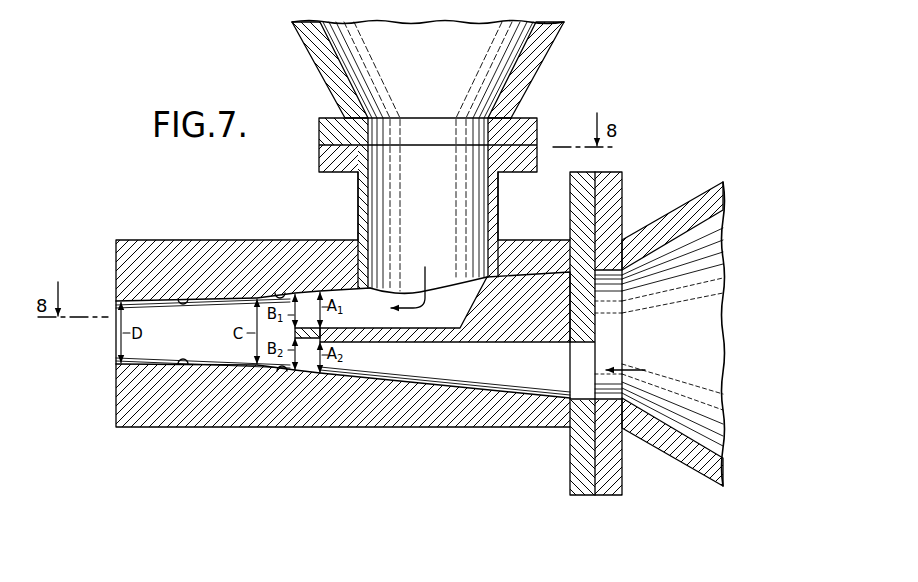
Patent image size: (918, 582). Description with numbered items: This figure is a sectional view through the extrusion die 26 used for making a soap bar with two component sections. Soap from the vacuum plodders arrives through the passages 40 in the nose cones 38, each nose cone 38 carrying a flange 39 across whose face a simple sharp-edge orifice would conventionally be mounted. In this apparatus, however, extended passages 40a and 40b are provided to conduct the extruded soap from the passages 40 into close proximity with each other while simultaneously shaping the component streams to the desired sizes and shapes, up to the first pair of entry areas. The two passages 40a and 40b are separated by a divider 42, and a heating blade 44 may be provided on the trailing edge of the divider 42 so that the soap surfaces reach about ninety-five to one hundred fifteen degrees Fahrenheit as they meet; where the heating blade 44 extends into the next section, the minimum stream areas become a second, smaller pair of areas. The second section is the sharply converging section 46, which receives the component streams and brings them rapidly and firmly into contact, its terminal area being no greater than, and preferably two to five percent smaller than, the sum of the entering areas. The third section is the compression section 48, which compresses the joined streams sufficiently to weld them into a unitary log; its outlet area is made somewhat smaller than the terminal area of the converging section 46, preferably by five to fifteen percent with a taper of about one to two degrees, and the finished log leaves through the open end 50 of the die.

The extrusion die 26 is at (110, 414).
The nose cone 38 is at (546, 61).
The flange 39 is at (539, 122).
The passage 40 is at (422, 75).
The passage 40a is at (370, 368).
The passage 40b is at (433, 315).
The divider 42 is at (350, 341).
The heating blade 44 is at (310, 333).
The converging section 46 is at (279, 291).
The compression section 48 is at (181, 296).
The open end 50 is at (115, 345).